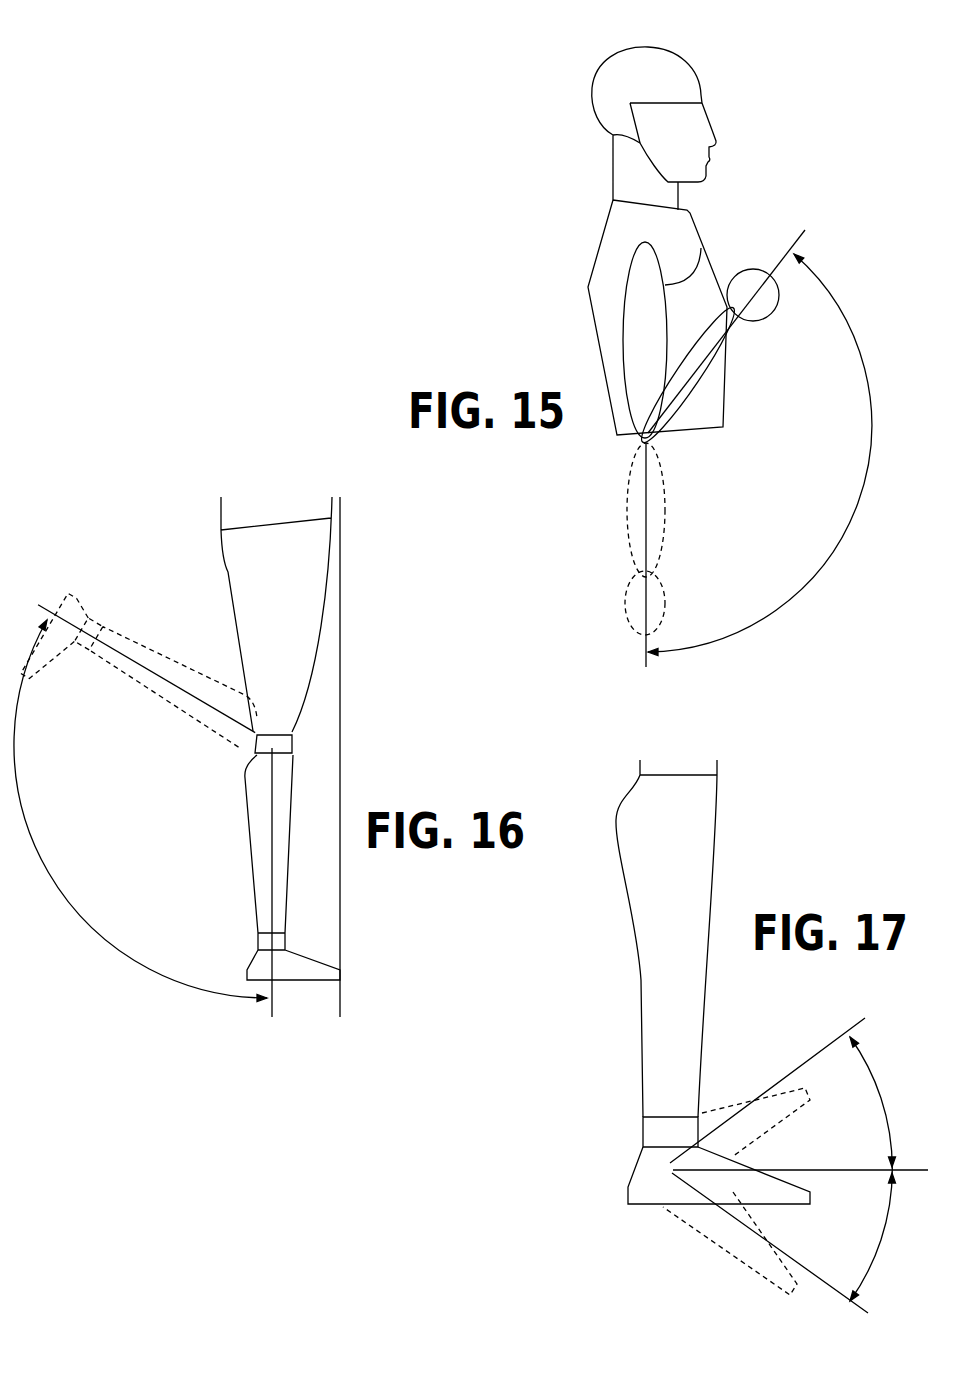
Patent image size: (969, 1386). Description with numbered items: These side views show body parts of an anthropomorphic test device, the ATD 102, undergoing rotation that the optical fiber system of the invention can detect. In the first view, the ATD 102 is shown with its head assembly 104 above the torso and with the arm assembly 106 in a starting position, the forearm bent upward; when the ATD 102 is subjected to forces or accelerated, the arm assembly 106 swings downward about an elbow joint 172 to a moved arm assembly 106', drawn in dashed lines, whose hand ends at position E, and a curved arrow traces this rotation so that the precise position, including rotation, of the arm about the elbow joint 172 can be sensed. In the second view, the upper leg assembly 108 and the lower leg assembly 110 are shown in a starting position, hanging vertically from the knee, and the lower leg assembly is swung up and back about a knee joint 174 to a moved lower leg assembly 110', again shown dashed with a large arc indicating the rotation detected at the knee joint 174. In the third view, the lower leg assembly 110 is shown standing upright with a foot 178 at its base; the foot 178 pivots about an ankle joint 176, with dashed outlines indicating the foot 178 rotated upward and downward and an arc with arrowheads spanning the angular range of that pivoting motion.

In FIG. 15, the ATD 102 is at (613, 158).
In FIG. 15, the head assembly 104 is at (672, 53).
In FIG. 15, the arm assembly 106 is at (752, 439).
In FIG. 15, the arm assembly in moved position 106' is at (692, 510).
In FIG. 15, the elbow joint 172 is at (640, 440).
In FIG. 15, the position E is at (667, 600).
In FIG. 16, the upper leg assembly 108 is at (300, 612).
In FIG. 16, the knee joint 174 is at (287, 742).
In FIG. 16, the lower leg assembly 110 is at (251, 867).
In FIG. 17, the lower leg assembly 110 is at (696, 938).
In FIG. 16, the lower leg assembly in moved position 110' is at (136, 791).
In FIG. 17, the ankle joint 176 is at (660, 1145).
In FIG. 17, the foot 178 is at (735, 1190).